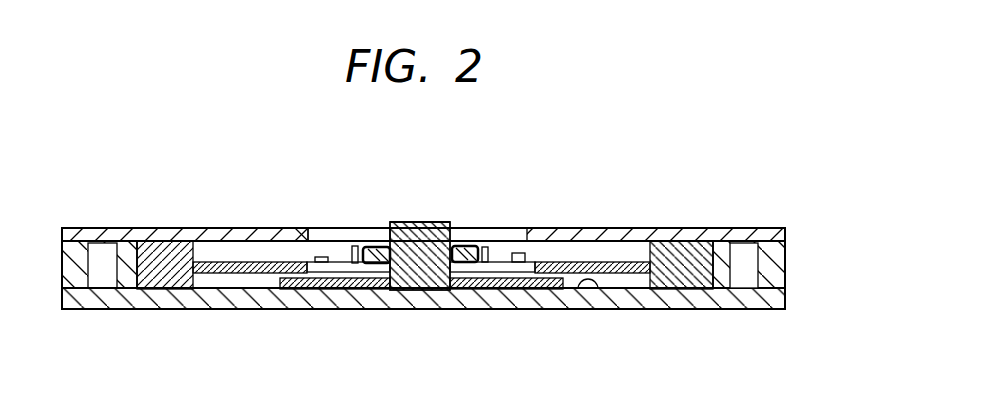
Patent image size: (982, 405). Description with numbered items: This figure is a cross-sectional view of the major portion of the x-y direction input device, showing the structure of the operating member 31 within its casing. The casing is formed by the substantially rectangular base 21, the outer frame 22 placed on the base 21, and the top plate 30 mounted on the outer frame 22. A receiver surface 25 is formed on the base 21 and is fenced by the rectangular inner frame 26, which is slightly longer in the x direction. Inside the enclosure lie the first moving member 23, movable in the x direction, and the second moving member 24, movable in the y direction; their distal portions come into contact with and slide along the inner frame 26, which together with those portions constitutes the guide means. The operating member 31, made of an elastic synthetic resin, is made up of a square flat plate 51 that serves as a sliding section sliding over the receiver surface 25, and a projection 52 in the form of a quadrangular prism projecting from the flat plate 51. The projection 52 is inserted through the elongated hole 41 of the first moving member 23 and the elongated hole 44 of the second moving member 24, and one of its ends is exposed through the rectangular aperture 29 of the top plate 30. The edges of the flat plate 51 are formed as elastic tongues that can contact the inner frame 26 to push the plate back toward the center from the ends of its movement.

The base 21 is at (658, 303).
The outer frame 22 is at (786, 253).
The first moving member 23 is at (557, 270).
The second moving member 24 is at (468, 260).
The receiver surface 25 is at (598, 292).
The inner frame 26 is at (744, 258).
The aperture 29 is at (328, 228).
The top plate 30 is at (676, 246).
The operating member 31 is at (401, 214).
The elongated hole 41 is at (508, 265).
The elongated hole 44 is at (378, 247).
The flat plate 51 is at (337, 290).
The projection 52 is at (428, 230).